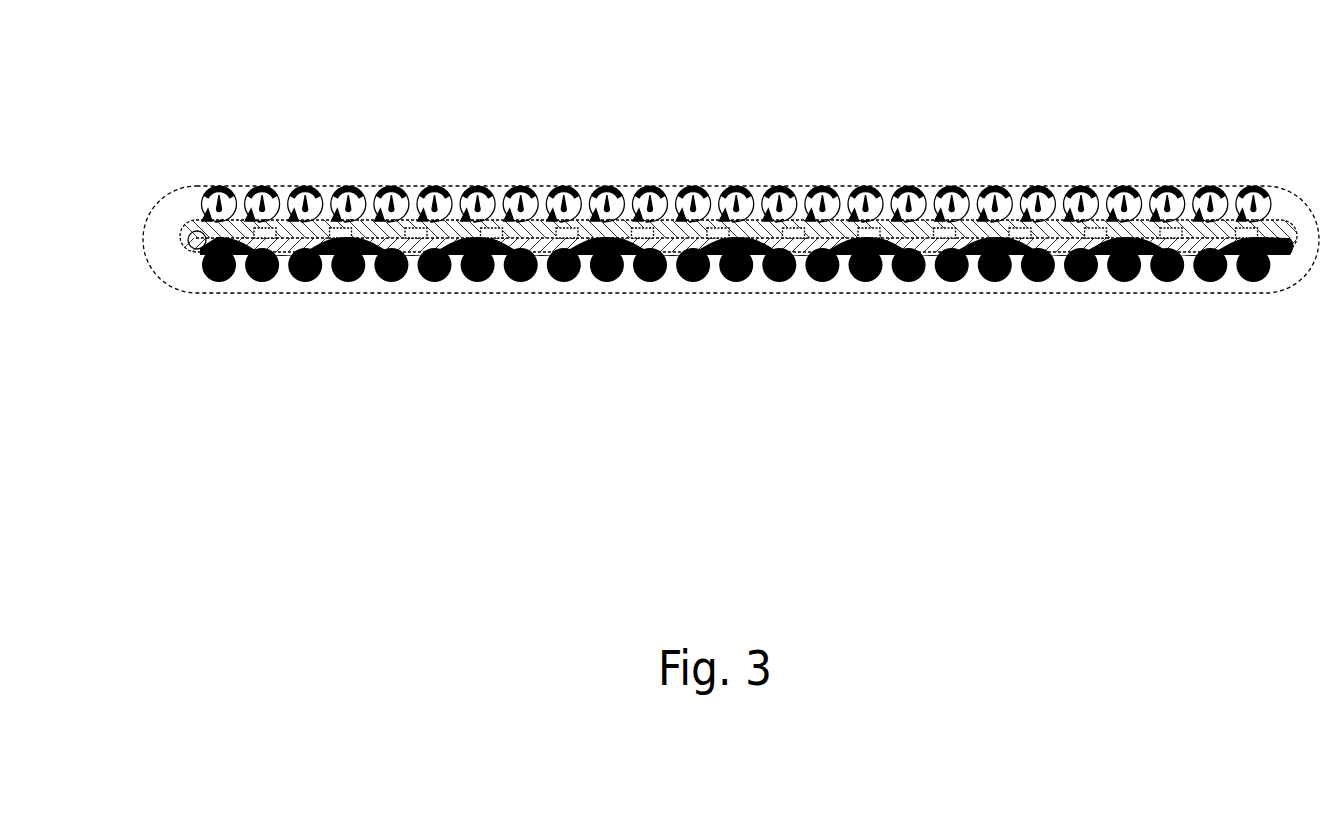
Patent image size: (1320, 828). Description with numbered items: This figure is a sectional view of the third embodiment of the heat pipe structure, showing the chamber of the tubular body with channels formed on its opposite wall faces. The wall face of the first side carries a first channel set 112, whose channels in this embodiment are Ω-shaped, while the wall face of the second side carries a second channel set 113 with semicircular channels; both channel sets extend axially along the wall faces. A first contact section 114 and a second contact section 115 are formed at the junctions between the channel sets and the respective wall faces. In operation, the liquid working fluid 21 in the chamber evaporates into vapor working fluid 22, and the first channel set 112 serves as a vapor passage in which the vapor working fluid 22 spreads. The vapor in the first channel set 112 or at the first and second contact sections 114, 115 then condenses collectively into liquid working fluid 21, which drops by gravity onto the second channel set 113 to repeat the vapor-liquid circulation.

The first channel set 112 is at (208, 198).
The second channel set 113 is at (197, 292).
The first contact section 114 is at (498, 210).
The second contact section 115 is at (583, 258).
The liquid working fluid 21 is at (335, 207).
The vapor working fluid 22 is at (393, 207).